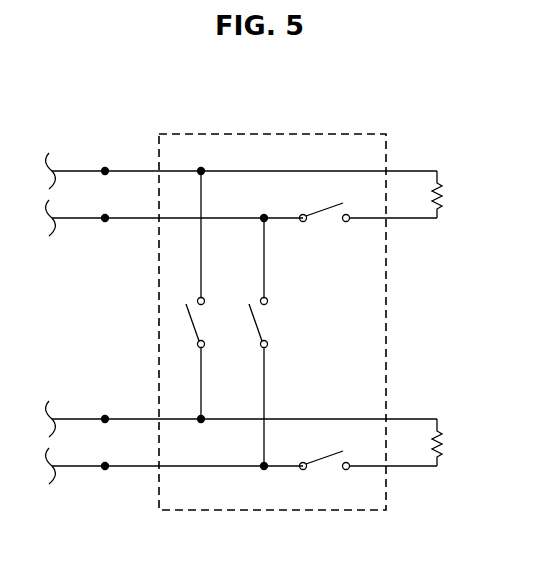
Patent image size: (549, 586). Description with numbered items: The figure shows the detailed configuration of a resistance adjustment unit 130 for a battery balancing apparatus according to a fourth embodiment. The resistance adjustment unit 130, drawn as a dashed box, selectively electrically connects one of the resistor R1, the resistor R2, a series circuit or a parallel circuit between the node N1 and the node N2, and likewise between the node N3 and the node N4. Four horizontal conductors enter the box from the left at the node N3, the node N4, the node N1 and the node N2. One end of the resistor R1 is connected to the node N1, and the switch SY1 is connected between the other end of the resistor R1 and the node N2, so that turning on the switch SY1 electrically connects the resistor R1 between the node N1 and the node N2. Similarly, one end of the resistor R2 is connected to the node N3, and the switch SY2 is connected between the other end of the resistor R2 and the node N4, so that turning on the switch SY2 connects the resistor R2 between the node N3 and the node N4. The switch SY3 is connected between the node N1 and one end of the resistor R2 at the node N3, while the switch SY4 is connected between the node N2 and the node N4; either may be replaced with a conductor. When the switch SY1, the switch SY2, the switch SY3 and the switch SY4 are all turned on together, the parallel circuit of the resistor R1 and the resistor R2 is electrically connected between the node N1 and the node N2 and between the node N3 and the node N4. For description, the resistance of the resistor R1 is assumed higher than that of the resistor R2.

The resistance adjustment unit 130 is at (311, 134).
The node N1 is at (105, 419).
The node N2 is at (105, 466).
The node N3 is at (105, 171).
The node N4 is at (105, 218).
The switch SY1 is at (369, 471).
The switch SY2 is at (369, 223).
The switch SY3 is at (208, 295).
The switch SY4 is at (271, 342).
The resistor R1 is at (449, 442).
The resistor R2 is at (449, 194).